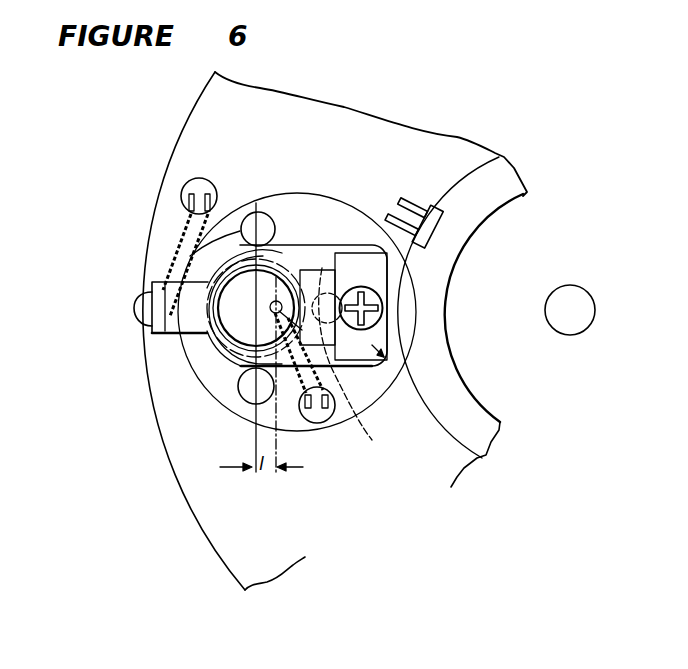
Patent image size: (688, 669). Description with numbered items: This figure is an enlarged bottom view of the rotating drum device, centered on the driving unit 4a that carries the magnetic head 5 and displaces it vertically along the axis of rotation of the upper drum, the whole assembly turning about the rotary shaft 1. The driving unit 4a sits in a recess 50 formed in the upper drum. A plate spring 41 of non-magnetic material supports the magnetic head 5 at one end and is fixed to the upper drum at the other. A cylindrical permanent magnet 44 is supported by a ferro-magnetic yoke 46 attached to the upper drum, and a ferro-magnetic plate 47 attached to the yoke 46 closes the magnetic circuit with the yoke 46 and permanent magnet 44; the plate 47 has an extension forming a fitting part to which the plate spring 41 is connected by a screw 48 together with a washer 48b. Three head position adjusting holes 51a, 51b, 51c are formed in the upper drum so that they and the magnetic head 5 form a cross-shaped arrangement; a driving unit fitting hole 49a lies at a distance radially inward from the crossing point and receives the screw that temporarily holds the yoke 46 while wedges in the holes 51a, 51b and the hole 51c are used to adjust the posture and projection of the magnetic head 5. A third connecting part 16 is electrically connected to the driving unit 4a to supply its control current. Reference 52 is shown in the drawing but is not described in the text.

The rotary shaft 1 is at (566, 334).
The driving unit 4a is at (147, 344).
The magnetic head 5 is at (137, 305).
The third connecting part 16 is at (320, 418).
The plate spring 41 is at (343, 229).
The permanent magnet 44 is at (232, 268).
The yoke 46 is at (322, 268).
The plate 47 is at (307, 272).
The screw 48 is at (382, 291).
The washer 48b is at (392, 374).
The driving unit fitting hole 49a is at (345, 419).
The recess 50 is at (237, 362).
The head position adjusting hole 51a is at (254, 212).
The head position adjusting hole 51b is at (240, 403).
The head position adjusting hole 51c is at (380, 214).
The hole 52 is at (228, 340).